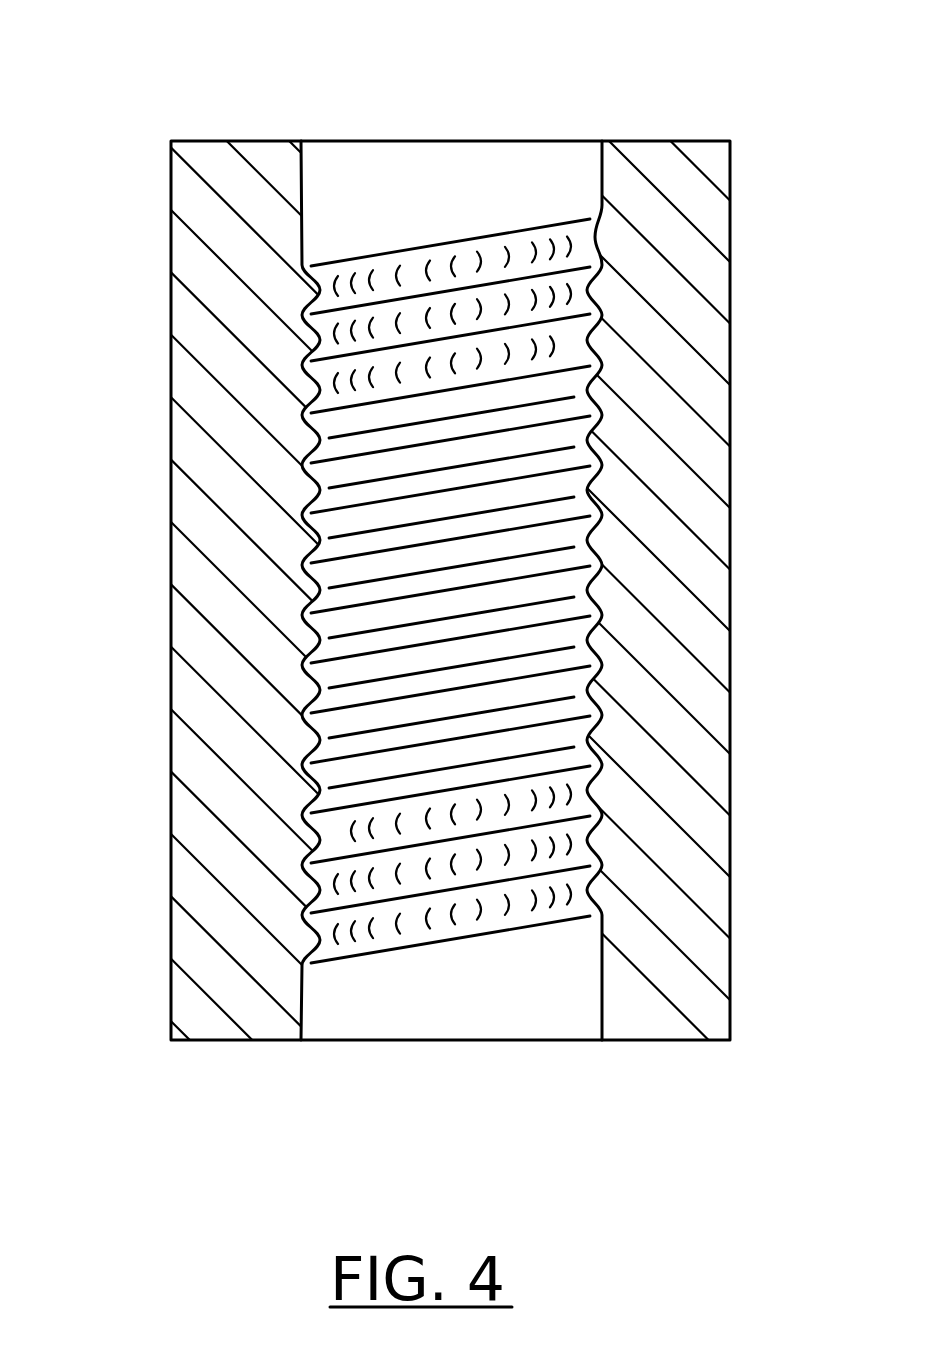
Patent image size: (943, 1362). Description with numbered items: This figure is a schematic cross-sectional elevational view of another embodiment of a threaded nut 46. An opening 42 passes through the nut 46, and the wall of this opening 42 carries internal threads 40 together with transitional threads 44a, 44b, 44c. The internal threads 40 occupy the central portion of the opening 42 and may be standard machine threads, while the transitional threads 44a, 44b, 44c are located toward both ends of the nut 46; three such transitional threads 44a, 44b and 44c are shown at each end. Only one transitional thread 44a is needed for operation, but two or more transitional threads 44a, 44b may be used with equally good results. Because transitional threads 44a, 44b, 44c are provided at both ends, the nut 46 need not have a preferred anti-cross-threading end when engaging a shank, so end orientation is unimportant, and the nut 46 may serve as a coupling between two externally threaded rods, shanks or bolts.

The internal threads 40 is at (317, 438).
The opening 42 is at (457, 177).
The transitional thread 44a is at (595, 238).
The transitional thread 44b is at (308, 290).
The transitional thread 44c is at (317, 837).
The nut 46 is at (732, 378).